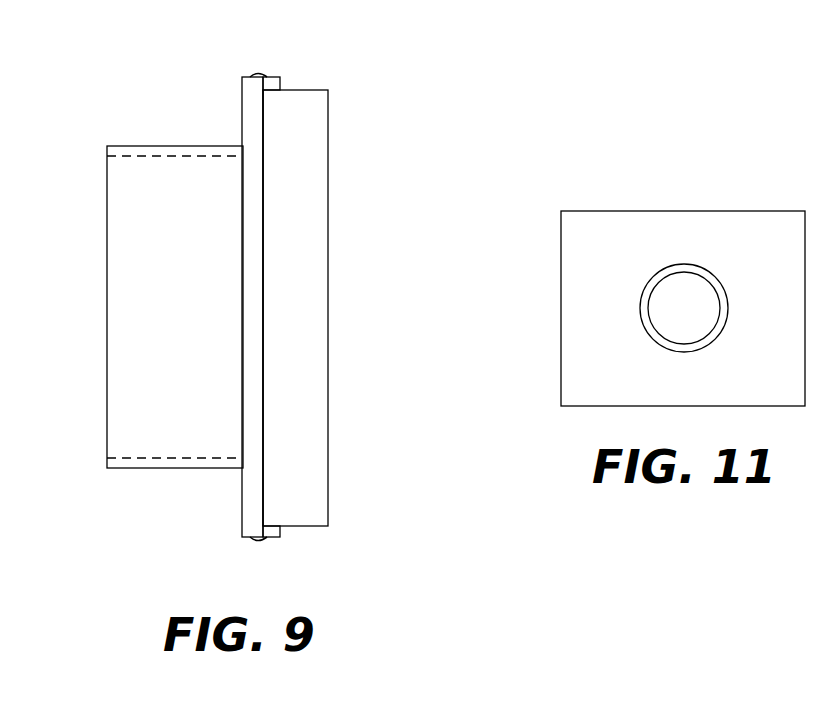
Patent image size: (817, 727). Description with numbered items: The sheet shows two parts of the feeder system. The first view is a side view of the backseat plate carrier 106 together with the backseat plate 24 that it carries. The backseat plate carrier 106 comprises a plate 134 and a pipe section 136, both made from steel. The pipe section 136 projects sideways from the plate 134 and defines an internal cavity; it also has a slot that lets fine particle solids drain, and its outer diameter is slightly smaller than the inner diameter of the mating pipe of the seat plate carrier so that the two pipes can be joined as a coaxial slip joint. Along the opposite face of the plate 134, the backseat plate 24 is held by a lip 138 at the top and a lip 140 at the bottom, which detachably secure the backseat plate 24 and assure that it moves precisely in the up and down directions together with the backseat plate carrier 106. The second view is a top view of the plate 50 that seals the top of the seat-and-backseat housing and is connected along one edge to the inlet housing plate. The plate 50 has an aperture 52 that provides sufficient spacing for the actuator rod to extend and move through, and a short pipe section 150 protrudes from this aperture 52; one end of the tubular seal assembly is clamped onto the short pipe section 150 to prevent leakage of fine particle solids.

In FIG. 9, the backseat plate 24 is at (315, 277).
In FIG. 11, the plate 50 is at (600, 222).
In FIG. 11, the aperture 52 is at (658, 305).
In FIG. 9, the backseat plate carrier 106 is at (251, 119).
In FIG. 9, the plate 134 is at (253, 423).
In FIG. 9, the pipe section 136 is at (163, 438).
In FIG. 9, the lip 138 is at (273, 83).
In FIG. 9, the lip 140 is at (275, 531).
In FIG. 11, the short pipe section 150 is at (647, 323).